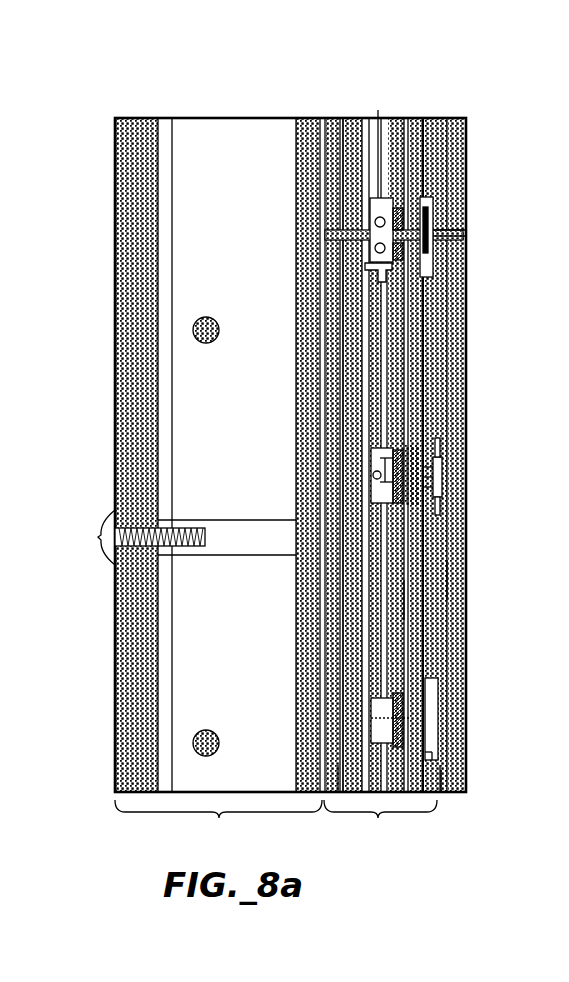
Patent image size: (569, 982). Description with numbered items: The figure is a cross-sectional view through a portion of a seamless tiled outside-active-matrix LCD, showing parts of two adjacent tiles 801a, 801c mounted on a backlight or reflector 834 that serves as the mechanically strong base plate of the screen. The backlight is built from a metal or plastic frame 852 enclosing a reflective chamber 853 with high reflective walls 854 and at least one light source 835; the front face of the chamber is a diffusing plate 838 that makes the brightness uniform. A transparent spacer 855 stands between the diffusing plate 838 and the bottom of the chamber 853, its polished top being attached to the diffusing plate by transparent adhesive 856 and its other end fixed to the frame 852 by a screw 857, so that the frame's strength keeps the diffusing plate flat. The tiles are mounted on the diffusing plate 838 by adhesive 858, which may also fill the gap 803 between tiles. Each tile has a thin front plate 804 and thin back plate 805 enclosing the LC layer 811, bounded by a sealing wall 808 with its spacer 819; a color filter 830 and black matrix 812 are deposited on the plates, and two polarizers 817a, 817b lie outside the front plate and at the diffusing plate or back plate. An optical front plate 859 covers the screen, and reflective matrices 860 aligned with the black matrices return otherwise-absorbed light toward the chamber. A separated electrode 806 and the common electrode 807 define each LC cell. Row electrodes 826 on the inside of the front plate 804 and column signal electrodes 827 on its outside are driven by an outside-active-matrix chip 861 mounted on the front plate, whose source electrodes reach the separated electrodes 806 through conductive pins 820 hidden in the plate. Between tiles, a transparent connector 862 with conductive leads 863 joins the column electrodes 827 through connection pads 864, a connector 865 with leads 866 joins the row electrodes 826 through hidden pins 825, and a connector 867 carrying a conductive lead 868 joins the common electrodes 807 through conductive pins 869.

The LCD tile portion 801a is at (374, 88).
The LCD tile portion 801c is at (378, 828).
The gap 803 is at (428, 178).
The thin front plate 804 is at (430, 295).
The thin back plate 805 is at (350, 412).
The separated electrode 806 is at (427, 335).
The common electrode 807 is at (425, 368).
The sealing wall 808 is at (366, 205).
The LC layer 811 is at (385, 385).
The black matrix 812 is at (375, 505).
The polarizer 817a is at (338, 778).
The polarizer 817b is at (441, 784).
The spacer 819 is at (379, 110).
The conductive pin 820 is at (414, 442).
The electrically conductive pin 825 is at (437, 498).
The row electrode 826 is at (410, 450).
The column signal electrode 827 is at (425, 568).
The color filter 830 is at (400, 592).
The backlight or reflector 834 is at (290, 481).
The light source 835 is at (140, 302).
The diffusing plate 838 is at (308, 270).
The frame 852 is at (136, 430).
The reflective chamber 853 is at (205, 407).
The reflective wall 854 is at (165, 481).
The spacer 855 is at (267, 530).
The transparent adhesive 856 is at (290, 538).
The screw 857 is at (100, 562).
The adhesive 858 is at (352, 228).
The optical front plate 859 is at (447, 196).
The reflective matrix 860 is at (317, 238).
The outside-active-matrix chip 861 is at (437, 476).
The connector 862 is at (445, 230).
The electrically conductive lead 863 is at (437, 238).
The electrically conductive connection pad 864 is at (427, 262).
The connector 865 is at (426, 550).
The electrically conductive lead 866 is at (438, 507).
The connector 867 is at (440, 780).
The conductive lead 868 is at (412, 720).
The conductive pin 869 is at (430, 753).